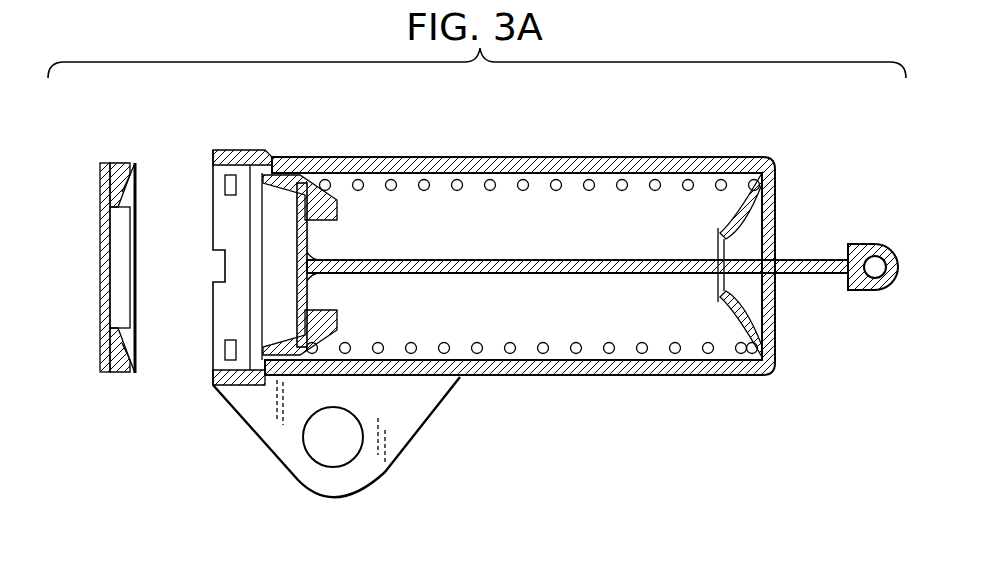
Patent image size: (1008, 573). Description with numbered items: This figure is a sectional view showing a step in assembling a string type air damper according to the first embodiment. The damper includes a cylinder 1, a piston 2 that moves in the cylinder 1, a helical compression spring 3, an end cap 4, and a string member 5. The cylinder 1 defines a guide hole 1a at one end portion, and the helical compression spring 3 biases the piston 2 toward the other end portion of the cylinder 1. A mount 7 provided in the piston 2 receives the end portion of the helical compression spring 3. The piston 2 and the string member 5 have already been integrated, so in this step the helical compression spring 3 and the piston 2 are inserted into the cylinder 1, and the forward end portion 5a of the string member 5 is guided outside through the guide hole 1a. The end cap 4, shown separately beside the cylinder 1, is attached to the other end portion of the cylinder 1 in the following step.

The cylinder 1 is at (432, 157).
The guide hole 1a is at (762, 285).
The piston 2 is at (297, 260).
The helical compression spring 3 is at (643, 354).
The end cap 4 is at (103, 290).
The string member 5 is at (522, 260).
The forward end portion 5a is at (856, 245).
The mount 7 is at (337, 190).